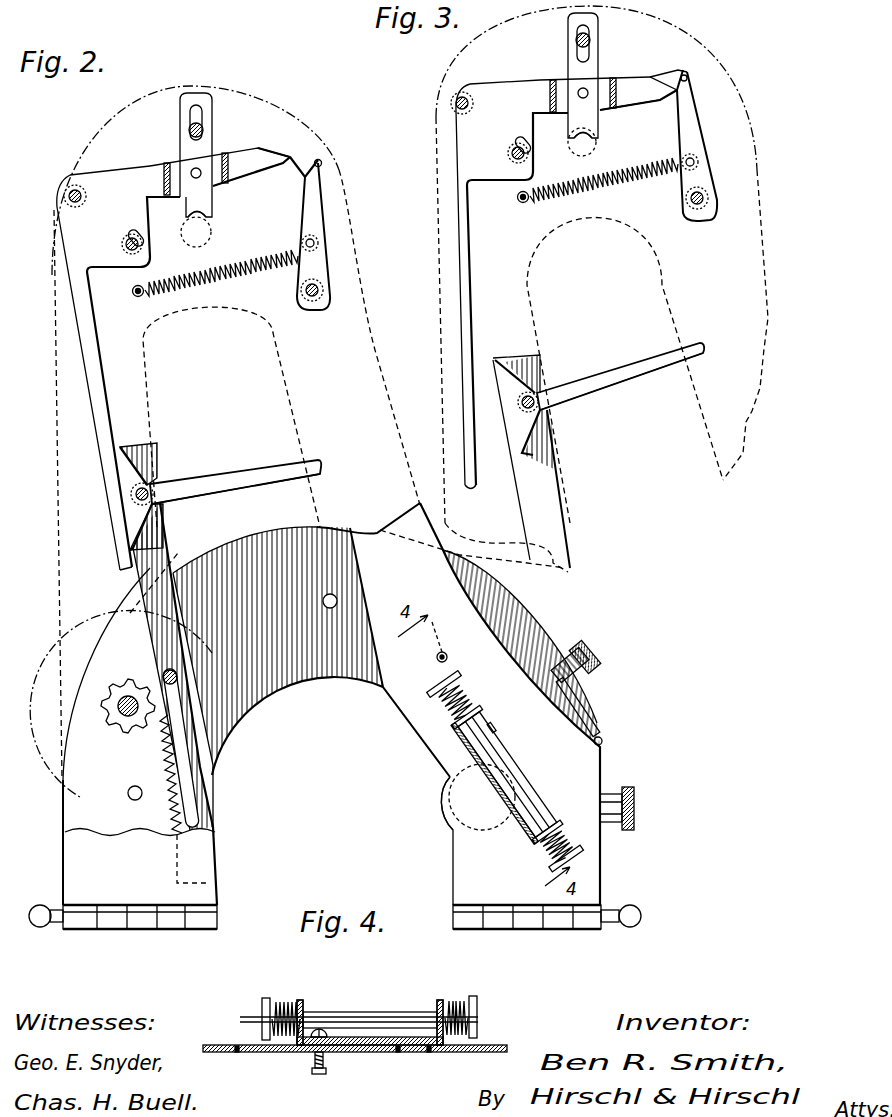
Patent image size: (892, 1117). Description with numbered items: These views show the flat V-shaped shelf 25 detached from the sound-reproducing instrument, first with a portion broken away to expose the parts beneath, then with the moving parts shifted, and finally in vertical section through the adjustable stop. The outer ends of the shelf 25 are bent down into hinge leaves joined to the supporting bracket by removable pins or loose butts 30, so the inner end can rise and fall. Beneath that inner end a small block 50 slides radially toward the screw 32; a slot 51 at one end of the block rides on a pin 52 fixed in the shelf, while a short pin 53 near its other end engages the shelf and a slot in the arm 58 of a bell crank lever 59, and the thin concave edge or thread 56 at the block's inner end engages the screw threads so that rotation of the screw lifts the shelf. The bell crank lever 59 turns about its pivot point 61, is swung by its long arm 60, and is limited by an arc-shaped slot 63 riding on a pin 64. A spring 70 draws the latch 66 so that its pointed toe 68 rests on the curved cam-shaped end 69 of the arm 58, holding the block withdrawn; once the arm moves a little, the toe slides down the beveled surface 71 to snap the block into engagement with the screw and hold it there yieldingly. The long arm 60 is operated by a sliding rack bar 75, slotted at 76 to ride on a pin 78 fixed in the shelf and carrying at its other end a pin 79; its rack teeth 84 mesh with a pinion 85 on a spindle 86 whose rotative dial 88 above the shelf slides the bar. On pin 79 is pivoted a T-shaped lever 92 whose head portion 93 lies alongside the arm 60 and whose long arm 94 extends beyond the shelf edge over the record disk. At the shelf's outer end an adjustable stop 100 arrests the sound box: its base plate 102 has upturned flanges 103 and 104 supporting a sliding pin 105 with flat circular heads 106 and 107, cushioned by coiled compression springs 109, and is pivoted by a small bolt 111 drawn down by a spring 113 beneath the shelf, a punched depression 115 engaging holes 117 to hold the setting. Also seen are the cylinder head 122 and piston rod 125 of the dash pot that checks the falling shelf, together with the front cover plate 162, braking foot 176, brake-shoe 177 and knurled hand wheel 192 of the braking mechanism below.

In FIG. 2, the shelf-like member 25 is at (370, 360).
In FIG. 3, the shelf-like member 25 is at (668, 284).
In FIG. 4, the shelf-like member 25 is at (464, 1053).
In FIG. 2, the removable pins or loose butts 30 is at (48, 906).
In FIG. 2, the screw 32 is at (212, 238).
In FIG. 3, the screw 32 is at (598, 143).
In FIG. 2, the block 50 is at (206, 145).
In FIG. 3, the block 50 is at (575, 67).
In FIG. 2, the slot 51 is at (197, 105).
In FIG. 3, the slot 51 is at (586, 56).
In FIG. 2, the pin 52 is at (190, 130).
In FIG. 3, the pin 52 is at (589, 38).
In FIG. 2, the short pin 53 is at (205, 166).
In FIG. 3, the short pin 53 is at (590, 93).
In FIG. 2, the thin concave edge or thread 56 is at (196, 222).
In FIG. 3, the thin concave edge or thread 56 is at (580, 140).
In FIG. 2, the arm 58 is at (234, 180).
In FIG. 3, the arm 58 is at (648, 104).
In FIG. 2, the bell crank lever 59 is at (122, 176).
In FIG. 3, the bell crank lever 59 is at (511, 80).
In FIG. 2, the long arm 60 is at (90, 400).
In FIG. 3, the long arm 60 is at (468, 374).
In FIG. 2, the pivot point 61 is at (64, 196).
In FIG. 3, the pivot point 61 is at (455, 96).
In FIG. 2, the slot 63 is at (136, 236).
In FIG. 3, the slot 63 is at (522, 142).
In FIG. 2, the pin 64 is at (123, 244).
In FIG. 3, the pin 64 is at (509, 153).
In FIG. 2, the latch 66 is at (312, 226).
In FIG. 3, the latch 66 is at (690, 128).
In FIG. 2, the pointed toe or foot 68 is at (320, 163).
In FIG. 3, the pointed toe or foot 68 is at (690, 95).
In FIG. 2, the curved or cam-shaped end 69 is at (303, 168).
In FIG. 3, the curved or cam-shaped end 69 is at (688, 90).
In FIG. 2, the spring 70 is at (267, 272).
In FIG. 3, the spring 70 is at (657, 178).
In FIG. 2, the beveled or wedge-shaped surface 71 is at (283, 152).
In FIG. 3, the beveled or wedge-shaped surface 71 is at (664, 82).
In FIG. 2, the sliding rack bar 75 is at (165, 622).
In FIG. 3, the sliding rack bar 75 is at (545, 472).
In FIG. 2, the slot 76 is at (190, 778).
In FIG. 2, the pin 78 is at (177, 676).
In FIG. 2, the pin 79 is at (152, 487).
In FIG. 3, the pin 79 is at (535, 395).
In FIG. 2, the rack teeth 84 is at (167, 787).
In FIG. 2, the pinion 85 is at (118, 725).
In FIG. 2, the spindle 86 is at (128, 696).
In FIG. 2, the rotative dial 88 is at (120, 632).
In FIG. 2, the T-shaped lever 92 is at (236, 497).
In FIG. 3, the T-shaped lever 92 is at (621, 383).
In FIG. 2, the head portion 93 is at (125, 470).
In FIG. 3, the head portion 93 is at (510, 372).
In FIG. 2, the long arm 94 is at (236, 472).
In FIG. 3, the long arm 94 is at (620, 368).
In FIG. 2, the stop 100 is at (507, 774).
In FIG. 4, the stop 100 is at (370, 1004).
In FIG. 2, the base plate 102 is at (494, 784).
In FIG. 4, the base plate 102 is at (368, 1046).
In FIG. 2, the flange 103 is at (467, 717).
In FIG. 4, the flange 103 is at (300, 1000).
In FIG. 2, the flange 104 is at (547, 832).
In FIG. 4, the flange 104 is at (438, 1000).
In FIG. 2, the sliding pin or bolt 105 is at (507, 774).
In FIG. 4, the sliding pin or bolt 105 is at (346, 1012).
In FIG. 2, the flat circular head 106 is at (444, 684).
In FIG. 4, the flat circular head 106 is at (264, 1000).
In FIG. 2, the flat circular head 107 is at (566, 858).
In FIG. 4, the flat circular head 107 is at (478, 1004).
In FIG. 2, the coiled compression springs 109 is at (506, 772).
In FIG. 4, the coiled compression springs 109 is at (282, 1000).
In FIG. 2, the small bolt 111 is at (491, 727).
In FIG. 4, the small bolt 111 is at (314, 1047).
In FIG. 4, the spring 113 is at (324, 1072).
In FIG. 4, the punched depression 115 is at (429, 1053).
In FIG. 2, the holes 117 is at (448, 656).
In FIG. 4, the holes 117 is at (237, 1053).
In FIG. 2, the cylinder head 122 is at (450, 800).
In FIG. 2, the piston rod 125 is at (455, 818).
In FIG. 2, the front cover plate or wall 162 is at (604, 742).
In FIG. 2, the braking foot 176 is at (598, 700).
In FIG. 2, the brake-shoe 177 is at (598, 660).
In FIG. 2, the knurled hand wheel 192 is at (636, 806).